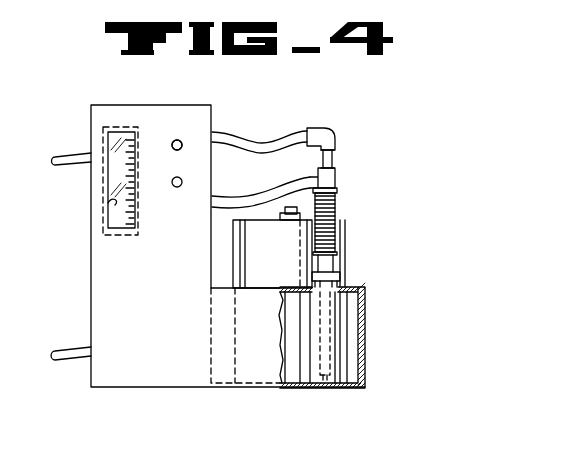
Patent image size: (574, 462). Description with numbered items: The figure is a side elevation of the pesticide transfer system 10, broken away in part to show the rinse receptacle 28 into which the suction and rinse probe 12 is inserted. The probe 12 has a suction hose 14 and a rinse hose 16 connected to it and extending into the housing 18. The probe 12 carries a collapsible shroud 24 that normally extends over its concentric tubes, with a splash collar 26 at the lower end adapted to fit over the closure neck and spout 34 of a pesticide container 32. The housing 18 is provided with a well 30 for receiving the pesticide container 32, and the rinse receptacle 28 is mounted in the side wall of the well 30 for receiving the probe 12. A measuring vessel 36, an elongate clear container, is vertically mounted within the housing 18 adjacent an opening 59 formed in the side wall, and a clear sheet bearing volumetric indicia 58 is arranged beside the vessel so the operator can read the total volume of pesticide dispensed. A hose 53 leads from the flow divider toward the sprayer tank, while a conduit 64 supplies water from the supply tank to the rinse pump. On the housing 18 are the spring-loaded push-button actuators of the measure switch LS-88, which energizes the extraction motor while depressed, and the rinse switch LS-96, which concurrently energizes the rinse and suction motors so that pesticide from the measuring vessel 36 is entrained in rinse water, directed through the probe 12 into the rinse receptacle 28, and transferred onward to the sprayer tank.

The pesticide transfer system 10 is at (348, 94).
The suction and rinse probe 12 is at (346, 152).
The suction hose 14 is at (232, 132).
The rinse hose 16 is at (233, 194).
The housing 18 is at (97, 283).
The collapsible shroud 24 is at (336, 202).
The splash collar 26 is at (341, 268).
The rinse receptacle 28 is at (333, 356).
The well 30 is at (352, 313).
The pesticide container 32 is at (275, 280).
The closure neck and spout 34 is at (288, 220).
The measuring vessel 36 is at (103, 135).
The hose 53 is at (68, 166).
The volumetric indicia 58 is at (130, 153).
The opening 59 is at (115, 205).
The conduit 64 is at (80, 356).
The measure switch LS-88 is at (182, 141).
The rinse switch LS-96 is at (177, 188).